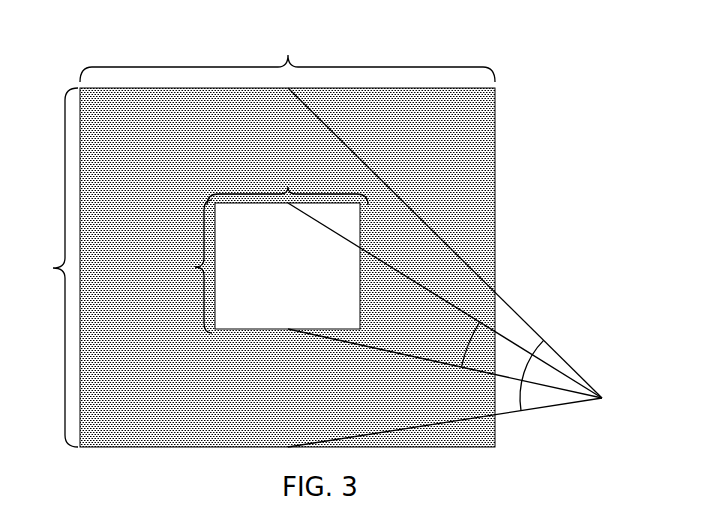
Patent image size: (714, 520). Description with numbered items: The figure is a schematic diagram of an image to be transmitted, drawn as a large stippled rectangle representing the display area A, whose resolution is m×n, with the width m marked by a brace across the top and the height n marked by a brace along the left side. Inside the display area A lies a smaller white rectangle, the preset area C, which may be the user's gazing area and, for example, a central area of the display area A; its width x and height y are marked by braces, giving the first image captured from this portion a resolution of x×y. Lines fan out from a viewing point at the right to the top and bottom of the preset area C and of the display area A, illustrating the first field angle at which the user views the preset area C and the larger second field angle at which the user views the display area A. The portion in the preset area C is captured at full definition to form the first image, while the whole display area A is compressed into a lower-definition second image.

The display area A is at (467, 145).
The preset area C is at (263, 300).
The horizontal resolution of the display area m is at (287, 53).
The vertical resolution of the display area n is at (52, 267).
The horizontal resolution of the first image x is at (287, 182).
The vertical resolution of the first image y is at (185, 266).